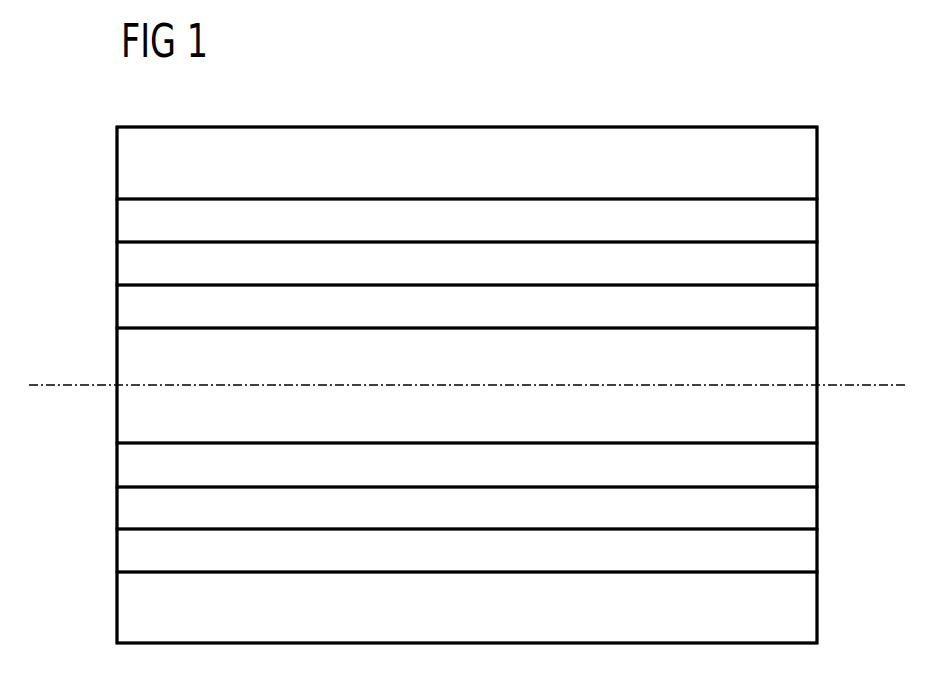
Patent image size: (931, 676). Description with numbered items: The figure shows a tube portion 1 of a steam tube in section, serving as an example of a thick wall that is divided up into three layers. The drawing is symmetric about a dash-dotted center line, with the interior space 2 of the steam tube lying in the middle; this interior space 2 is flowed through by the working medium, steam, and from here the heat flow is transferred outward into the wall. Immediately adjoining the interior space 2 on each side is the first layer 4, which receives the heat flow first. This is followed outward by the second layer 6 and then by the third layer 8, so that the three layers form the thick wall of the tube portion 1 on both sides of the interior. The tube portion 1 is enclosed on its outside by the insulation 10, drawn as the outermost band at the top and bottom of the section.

The tube portion 1 is at (818, 218).
The interior space 2 is at (133, 418).
The first layer 4 is at (133, 309).
The second layer 6 is at (133, 266).
The third layer 8 is at (133, 223).
The insulation 10 is at (133, 166).